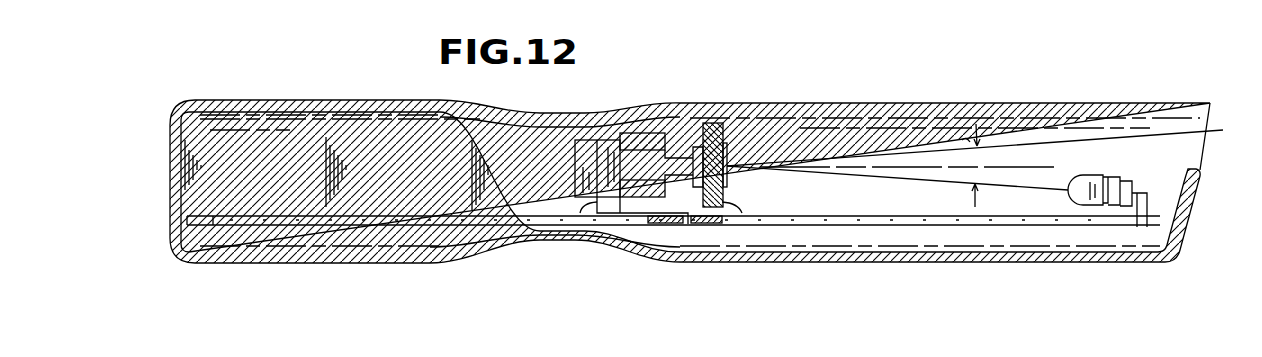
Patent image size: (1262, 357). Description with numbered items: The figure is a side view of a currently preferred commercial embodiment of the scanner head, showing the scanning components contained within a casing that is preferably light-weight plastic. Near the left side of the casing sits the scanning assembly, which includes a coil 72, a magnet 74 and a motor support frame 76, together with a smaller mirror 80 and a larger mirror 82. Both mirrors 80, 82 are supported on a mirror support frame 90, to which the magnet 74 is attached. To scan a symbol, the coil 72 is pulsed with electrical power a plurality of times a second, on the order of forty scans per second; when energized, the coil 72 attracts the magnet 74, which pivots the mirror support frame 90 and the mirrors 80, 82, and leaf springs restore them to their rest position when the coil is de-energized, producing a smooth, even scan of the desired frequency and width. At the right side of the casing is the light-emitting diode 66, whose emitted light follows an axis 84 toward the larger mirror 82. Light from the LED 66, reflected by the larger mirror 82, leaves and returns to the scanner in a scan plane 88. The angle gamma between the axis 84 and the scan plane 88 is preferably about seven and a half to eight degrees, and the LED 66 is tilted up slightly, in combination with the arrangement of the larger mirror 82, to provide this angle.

The light-emitting diode 66 is at (1091, 177).
The coil 72 is at (648, 133).
The magnet 74 is at (684, 160).
The motor support frame 76 is at (565, 248).
The smaller mirror 80 is at (727, 125).
The larger mirror 82 is at (741, 226).
The axis 84 is at (940, 184).
The scan plane 88 is at (1040, 143).
The mirror support frame 90 is at (665, 224).